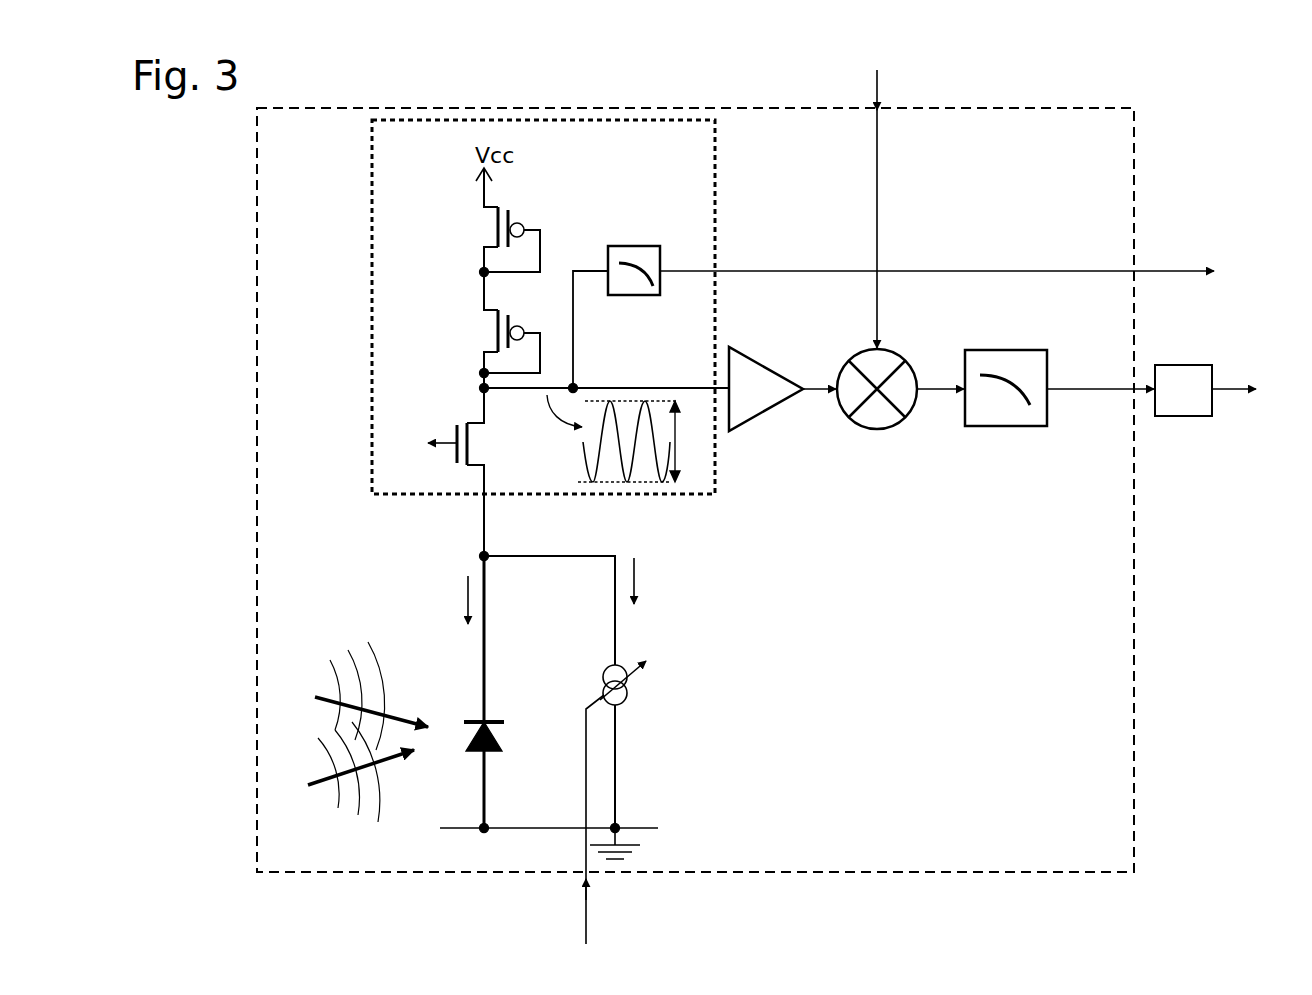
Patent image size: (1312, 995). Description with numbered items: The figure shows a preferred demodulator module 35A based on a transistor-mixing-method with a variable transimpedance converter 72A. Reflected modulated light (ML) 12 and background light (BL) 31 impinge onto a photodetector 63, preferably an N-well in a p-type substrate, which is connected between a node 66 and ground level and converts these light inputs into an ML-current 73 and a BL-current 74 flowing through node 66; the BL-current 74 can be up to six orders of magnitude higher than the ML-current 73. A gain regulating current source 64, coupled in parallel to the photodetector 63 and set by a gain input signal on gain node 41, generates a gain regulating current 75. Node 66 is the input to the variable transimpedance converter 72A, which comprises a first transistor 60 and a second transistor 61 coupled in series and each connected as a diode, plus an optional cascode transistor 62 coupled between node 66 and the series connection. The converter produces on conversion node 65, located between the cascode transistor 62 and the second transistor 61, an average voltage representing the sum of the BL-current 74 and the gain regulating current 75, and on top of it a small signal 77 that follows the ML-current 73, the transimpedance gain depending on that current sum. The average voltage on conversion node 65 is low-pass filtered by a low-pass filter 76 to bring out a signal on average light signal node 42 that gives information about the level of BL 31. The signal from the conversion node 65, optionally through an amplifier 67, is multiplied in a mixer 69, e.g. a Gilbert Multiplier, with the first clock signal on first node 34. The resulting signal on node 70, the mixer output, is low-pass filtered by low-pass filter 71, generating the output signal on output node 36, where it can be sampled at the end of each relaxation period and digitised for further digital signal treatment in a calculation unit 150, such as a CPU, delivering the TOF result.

The modulated light 12 is at (354, 706).
The background light 31 is at (344, 776).
The first node 34 is at (870, 74).
The demodulator module 35A is at (753, 873).
The output node 36 is at (1090, 393).
The gain node 41 is at (583, 918).
The average light signal node 42 is at (1180, 273).
The first transistor 60 is at (490, 230).
The second transistor 61 is at (492, 332).
The cascode transistor 62 is at (462, 432).
The photodetector 63 is at (468, 748).
The gain regulating current source 64 is at (628, 701).
The conversion node 65 is at (610, 385).
The node 66 is at (490, 540).
The amplifier 67 is at (741, 367).
The mixer 69 is at (846, 358).
The node 70 is at (930, 381).
The low-pass filter 71 is at (1010, 348).
The variable transimpedance converter 72A is at (715, 221).
The ML-current 73 is at (429, 620).
The BL-current 74 is at (449, 599).
The gain regulating current 75 is at (656, 581).
The low-pass filter 76 is at (632, 245).
The small signal 77 is at (643, 441).
The calculation unit 150 is at (1192, 417).